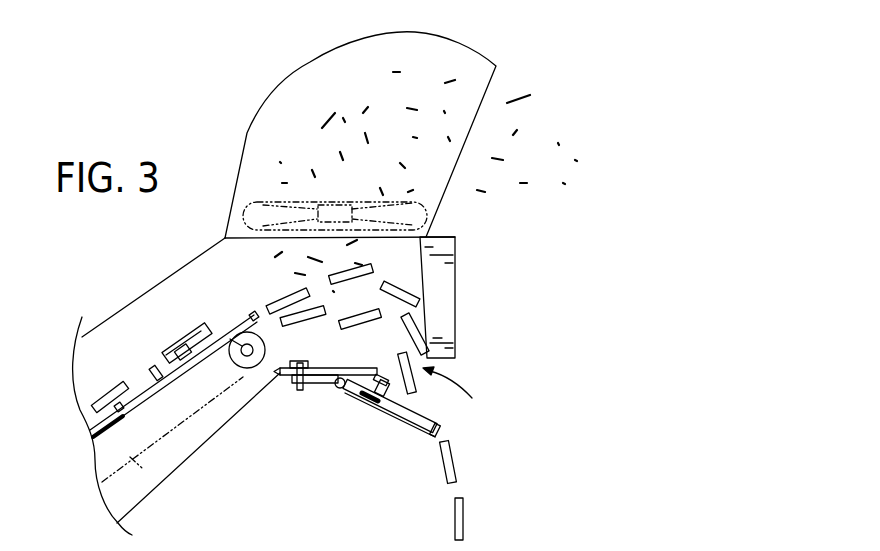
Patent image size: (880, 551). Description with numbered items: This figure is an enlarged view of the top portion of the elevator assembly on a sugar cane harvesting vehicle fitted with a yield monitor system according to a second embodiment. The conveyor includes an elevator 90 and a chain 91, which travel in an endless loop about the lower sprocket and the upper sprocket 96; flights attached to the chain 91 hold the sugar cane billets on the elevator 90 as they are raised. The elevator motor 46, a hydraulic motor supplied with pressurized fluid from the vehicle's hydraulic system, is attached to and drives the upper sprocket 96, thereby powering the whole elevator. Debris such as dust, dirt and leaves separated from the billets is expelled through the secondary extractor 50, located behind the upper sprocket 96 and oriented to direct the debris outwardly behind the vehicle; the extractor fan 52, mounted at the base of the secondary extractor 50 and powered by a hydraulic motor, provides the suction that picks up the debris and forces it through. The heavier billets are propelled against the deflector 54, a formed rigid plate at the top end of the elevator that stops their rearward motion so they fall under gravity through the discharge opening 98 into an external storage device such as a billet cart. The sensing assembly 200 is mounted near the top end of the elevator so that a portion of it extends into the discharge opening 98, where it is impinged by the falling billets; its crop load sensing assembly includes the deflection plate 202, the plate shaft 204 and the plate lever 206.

The elevator motor 46 is at (253, 332).
The secondary extractor 50 is at (455, 42).
The extractor fan 52 is at (262, 200).
The deflector 54 is at (457, 299).
The elevator 90 is at (163, 378).
The chain 91 is at (175, 422).
The upper sprocket 96 is at (227, 333).
The discharge opening 98 is at (462, 388).
The sensing assembly 200 is at (352, 456).
The deflection plate 202 is at (420, 436).
The plate shaft 204 is at (345, 387).
The plate lever 206 is at (315, 382).